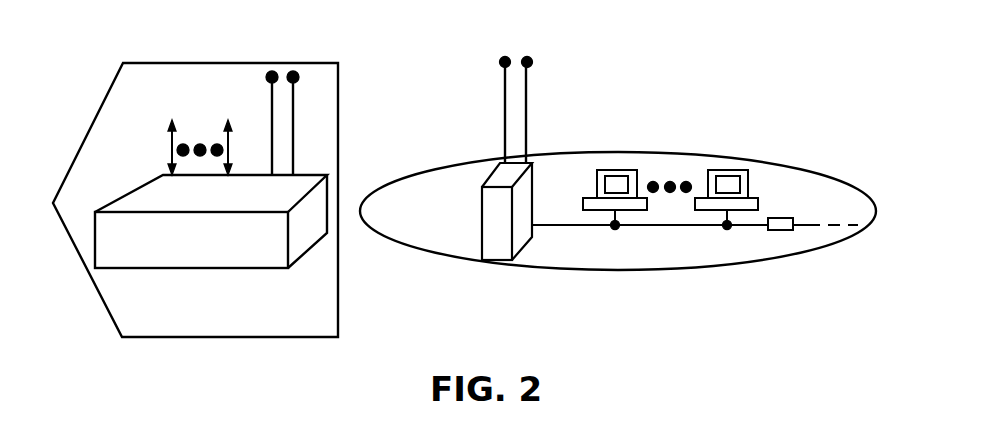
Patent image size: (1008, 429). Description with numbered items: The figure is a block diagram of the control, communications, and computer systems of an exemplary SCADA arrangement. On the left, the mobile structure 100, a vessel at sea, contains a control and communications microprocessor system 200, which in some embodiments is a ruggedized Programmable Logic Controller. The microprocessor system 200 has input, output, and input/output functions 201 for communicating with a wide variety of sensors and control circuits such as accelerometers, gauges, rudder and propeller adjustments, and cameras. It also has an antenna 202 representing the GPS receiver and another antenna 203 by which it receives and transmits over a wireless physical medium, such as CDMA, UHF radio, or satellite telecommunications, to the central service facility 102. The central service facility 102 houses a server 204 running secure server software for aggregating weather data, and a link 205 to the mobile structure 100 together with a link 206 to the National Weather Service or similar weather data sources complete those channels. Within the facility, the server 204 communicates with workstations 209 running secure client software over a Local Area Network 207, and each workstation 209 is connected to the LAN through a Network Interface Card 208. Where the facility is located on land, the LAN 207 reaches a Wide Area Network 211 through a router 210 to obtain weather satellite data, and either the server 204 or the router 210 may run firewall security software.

The mobile structure 100 is at (123, 62).
The central service facility 102 is at (625, 152).
The control and communications microprocessor system 200 is at (257, 272).
The input, output, and input/output (I/O) functions 201 is at (173, 120).
The GPS receiver antenna 202 is at (270, 92).
The antenna for wireless communication 203 is at (294, 93).
The server 204 is at (481, 188).
The link to the mobile structure 205 is at (504, 94).
The link to weather data disseminating entities 206 is at (528, 97).
The Local Area Network (LAN) 207 is at (563, 229).
The Network Interface Card (NIC) 208 is at (622, 231).
The workstation 209 is at (644, 166).
The router 210 is at (793, 218).
The Wide Area Network (WAN) 211 is at (818, 230).